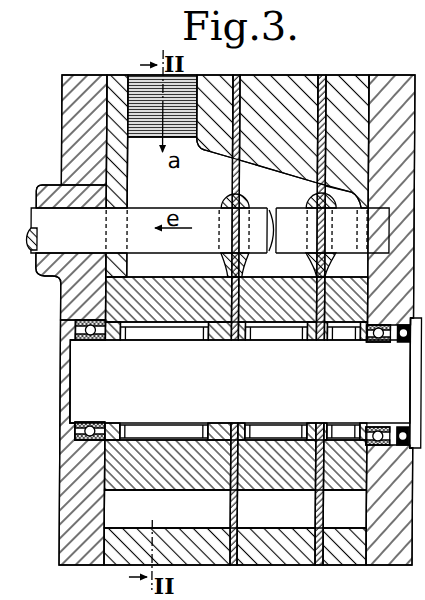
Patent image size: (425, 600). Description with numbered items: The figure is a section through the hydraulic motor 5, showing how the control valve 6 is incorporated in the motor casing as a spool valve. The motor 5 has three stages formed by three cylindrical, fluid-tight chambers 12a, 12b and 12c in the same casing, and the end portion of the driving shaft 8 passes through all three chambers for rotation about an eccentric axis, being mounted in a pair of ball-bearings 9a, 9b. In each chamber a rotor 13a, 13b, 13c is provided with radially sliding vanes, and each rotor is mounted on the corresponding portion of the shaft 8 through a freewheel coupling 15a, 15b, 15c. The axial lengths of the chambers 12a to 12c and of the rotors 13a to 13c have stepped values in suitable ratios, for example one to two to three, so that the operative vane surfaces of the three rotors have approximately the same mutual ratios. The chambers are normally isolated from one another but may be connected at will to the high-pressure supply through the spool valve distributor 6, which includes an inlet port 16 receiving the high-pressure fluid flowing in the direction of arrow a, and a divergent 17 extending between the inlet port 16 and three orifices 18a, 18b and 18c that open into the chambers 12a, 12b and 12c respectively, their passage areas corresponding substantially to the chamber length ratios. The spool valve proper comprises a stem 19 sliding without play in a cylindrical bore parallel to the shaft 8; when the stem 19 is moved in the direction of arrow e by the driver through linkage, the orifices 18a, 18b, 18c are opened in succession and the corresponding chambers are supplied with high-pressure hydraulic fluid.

The hydraulic motor 5 is at (61, 102).
The control valve 6 is at (144, 190).
The driving shaft 8 is at (85, 401).
The ball-bearing 9a is at (385, 343).
The ball-bearing 9b is at (78, 328).
The chamber 12a is at (344, 509).
The chamber 12b is at (276, 509).
The chamber 12c is at (167, 509).
The rotor 13a is at (352, 441).
The rotor 13b is at (260, 441).
The rotor 13c is at (148, 443).
The freewheel coupling 15a is at (343, 341).
The freewheel coupling 15b is at (266, 341).
The freewheel coupling 15c is at (157, 341).
The inlet port 16 is at (137, 92).
The divergent 17 is at (328, 230).
The orifice 18a is at (339, 195).
The orifice 18b is at (269, 185).
The orifice 18c is at (201, 200).
The stem 19 is at (62, 238).